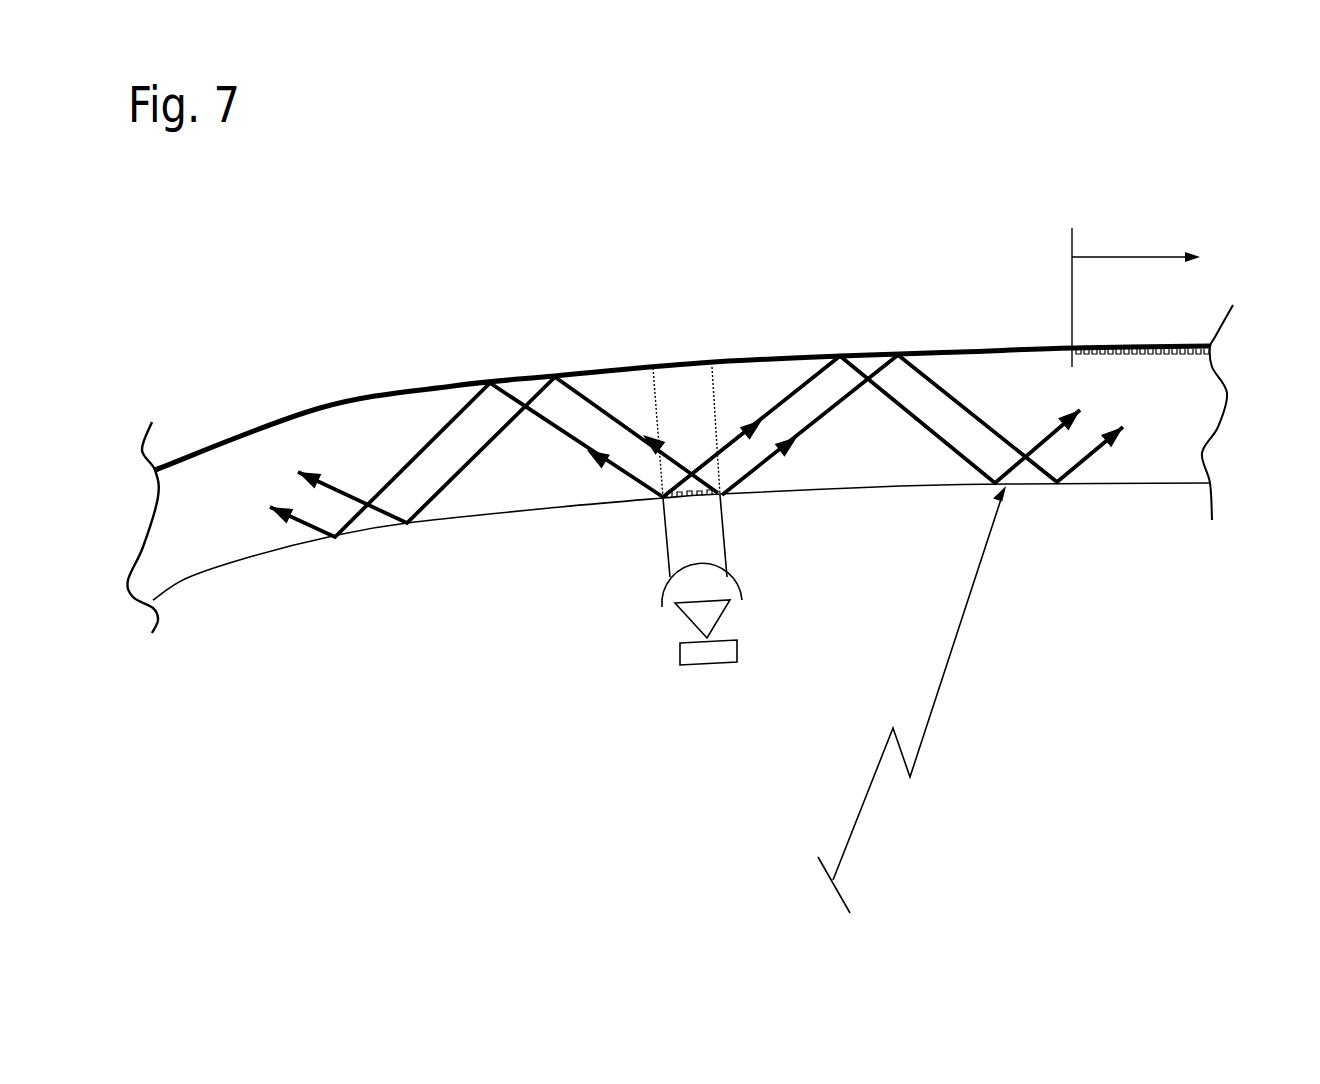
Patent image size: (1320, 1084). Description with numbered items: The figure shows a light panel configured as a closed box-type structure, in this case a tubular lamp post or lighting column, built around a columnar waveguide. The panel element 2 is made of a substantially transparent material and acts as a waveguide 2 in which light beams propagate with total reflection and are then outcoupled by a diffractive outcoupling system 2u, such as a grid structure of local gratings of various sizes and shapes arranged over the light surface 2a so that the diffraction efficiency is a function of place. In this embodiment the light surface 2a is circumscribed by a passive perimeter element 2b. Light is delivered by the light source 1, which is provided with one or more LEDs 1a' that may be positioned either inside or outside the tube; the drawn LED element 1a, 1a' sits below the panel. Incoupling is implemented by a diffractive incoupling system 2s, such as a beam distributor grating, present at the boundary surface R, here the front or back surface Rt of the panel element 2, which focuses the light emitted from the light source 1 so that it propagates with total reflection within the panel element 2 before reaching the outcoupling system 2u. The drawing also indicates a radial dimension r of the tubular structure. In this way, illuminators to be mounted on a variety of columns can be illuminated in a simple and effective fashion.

The panel element 2 is at (195, 543).
The light surface 2a is at (1147, 255).
The passive perimeter element 2b is at (453, 384).
The outcoupling system 2u is at (1072, 348).
The incoupling system 2s is at (727, 503).
The boundary surface R is at (649, 489).
The front or back surface Rt is at (673, 507).
The light source 1 is at (663, 674).
The light emitting element 1a is at (663, 674).
The LED 1a' is at (663, 674).
The radius r is at (941, 682).